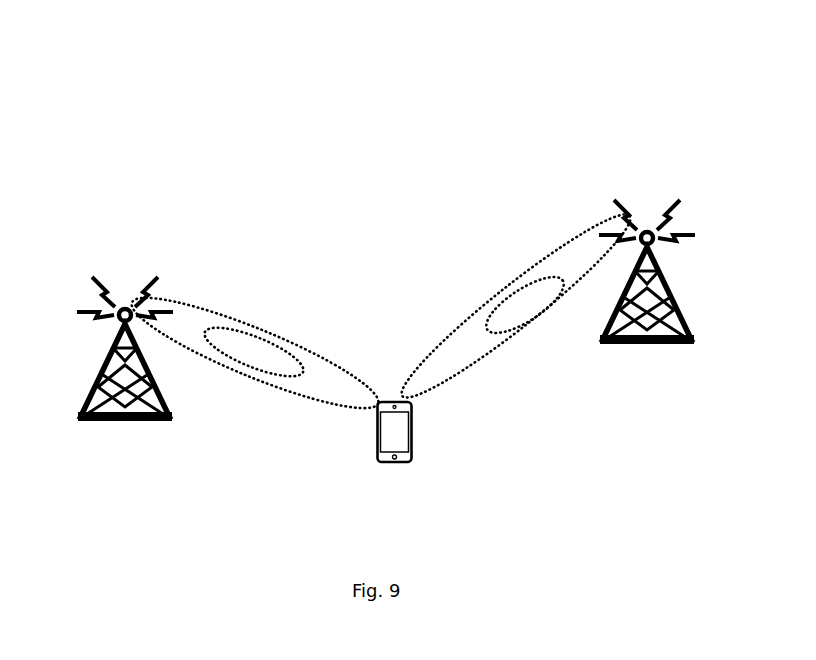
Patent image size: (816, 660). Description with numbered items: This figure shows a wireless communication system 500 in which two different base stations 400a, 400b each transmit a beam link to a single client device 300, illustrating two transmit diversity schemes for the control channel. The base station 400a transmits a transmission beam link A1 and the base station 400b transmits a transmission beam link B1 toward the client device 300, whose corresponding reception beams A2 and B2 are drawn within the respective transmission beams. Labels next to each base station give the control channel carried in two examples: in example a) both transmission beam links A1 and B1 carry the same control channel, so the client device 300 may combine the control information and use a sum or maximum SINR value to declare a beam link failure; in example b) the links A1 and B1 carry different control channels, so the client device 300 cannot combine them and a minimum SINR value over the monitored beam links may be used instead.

The wireless communication system 500 is at (140, 95).
The base station 400a is at (100, 425).
The base station 400b is at (650, 346).
The client device 300 is at (393, 463).
The transmission beam link A1 is at (204, 302).
The reception beam A2 is at (290, 390).
The transmission beam link B1 is at (529, 267).
The reception beam B2 is at (477, 372).